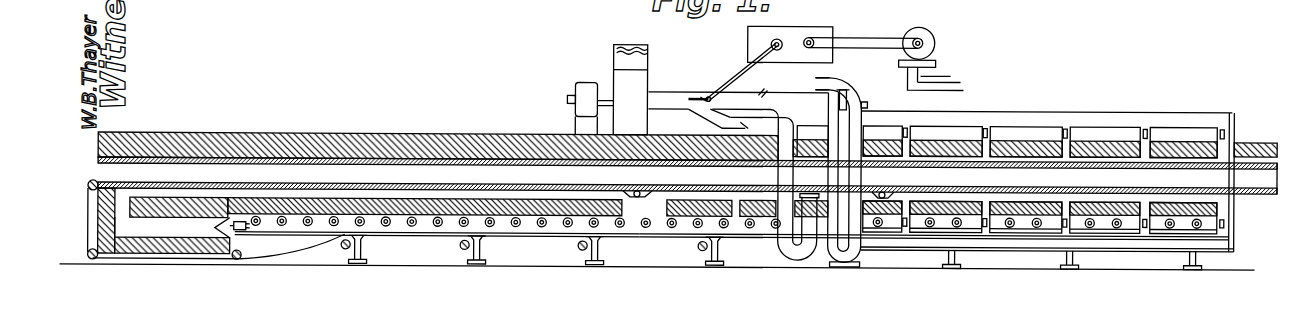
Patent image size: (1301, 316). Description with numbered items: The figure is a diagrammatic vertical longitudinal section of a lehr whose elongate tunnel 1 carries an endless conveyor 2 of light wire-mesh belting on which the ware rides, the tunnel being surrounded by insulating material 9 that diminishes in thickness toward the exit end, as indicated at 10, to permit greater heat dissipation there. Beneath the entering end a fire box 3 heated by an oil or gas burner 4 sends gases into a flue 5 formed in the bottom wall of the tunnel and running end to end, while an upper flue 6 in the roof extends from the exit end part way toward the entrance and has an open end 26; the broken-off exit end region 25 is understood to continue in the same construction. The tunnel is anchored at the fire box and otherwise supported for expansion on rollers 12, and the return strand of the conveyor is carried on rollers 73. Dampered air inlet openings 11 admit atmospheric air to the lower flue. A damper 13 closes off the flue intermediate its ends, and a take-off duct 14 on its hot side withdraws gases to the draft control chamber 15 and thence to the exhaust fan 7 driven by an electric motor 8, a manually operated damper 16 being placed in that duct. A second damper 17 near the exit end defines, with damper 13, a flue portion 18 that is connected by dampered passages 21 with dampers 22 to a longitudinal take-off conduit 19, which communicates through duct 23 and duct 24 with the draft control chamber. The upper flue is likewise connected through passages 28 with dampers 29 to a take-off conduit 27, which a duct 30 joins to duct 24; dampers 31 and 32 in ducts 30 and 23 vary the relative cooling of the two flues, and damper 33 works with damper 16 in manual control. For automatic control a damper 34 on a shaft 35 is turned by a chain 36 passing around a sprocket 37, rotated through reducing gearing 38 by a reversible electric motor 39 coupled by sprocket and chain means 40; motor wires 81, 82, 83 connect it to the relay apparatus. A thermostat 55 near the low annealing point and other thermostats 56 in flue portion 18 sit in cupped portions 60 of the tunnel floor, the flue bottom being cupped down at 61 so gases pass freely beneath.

The tunnel 1 is at (297, 168).
The endless conveyor 2 is at (207, 182).
The fire box 3 is at (163, 234).
The oil or gas burner 4 is at (237, 257).
The flue 5 is at (318, 197).
The upper flue 6 is at (1033, 154).
The exhaust fan 7 is at (642, 76).
The electric motor 8 is at (585, 80).
The insulating material 9 is at (407, 148).
The diminishing insulation portion 10 is at (962, 136).
The dampered air inlet openings 11 is at (731, 229).
The rollers 12 is at (562, 236).
The damper 13 is at (812, 190).
The take-off duct 14 is at (786, 252).
The draft control chamber 15 is at (702, 92).
The manually operated damper 16 is at (700, 116).
The second damper 17 is at (1264, 196).
The flue portion 18 is at (1058, 192).
The take-off conduit 19 is at (1010, 238).
The dampered passages 21 is at (1193, 248).
The dampers 22 is at (982, 222).
The duct 23 is at (851, 258).
The duct 24 is at (818, 82).
The band end 25 is at (1277, 200).
The open end 26 is at (1280, 150).
The take-off conduit 27 is at (1013, 113).
The passages 28 is at (1138, 146).
The dampers 29 is at (1140, 121).
The duct 30 is at (858, 82).
The manually operated damper 31 is at (836, 98).
The manually operated damper 32 is at (867, 101).
The damper 33 is at (768, 86).
The damper 34 is at (702, 96).
The shaft 35 is at (712, 95).
The chain 36 is at (758, 56).
The sprocket 37 is at (778, 36).
The reducing gearing 38 is at (805, 26).
The electric motor 39 is at (918, 23).
The sprocket and chain means 40 is at (860, 34).
The thermostat 55 is at (627, 232).
The thermostat 56 is at (876, 226).
The cupped portions 60 is at (640, 186).
The cupped flue bottom 61 is at (643, 224).
The rollers 73 is at (475, 246).
The motor wire 81 is at (955, 92).
The motor wire 82 is at (947, 68).
The motor wire 83 is at (953, 76).